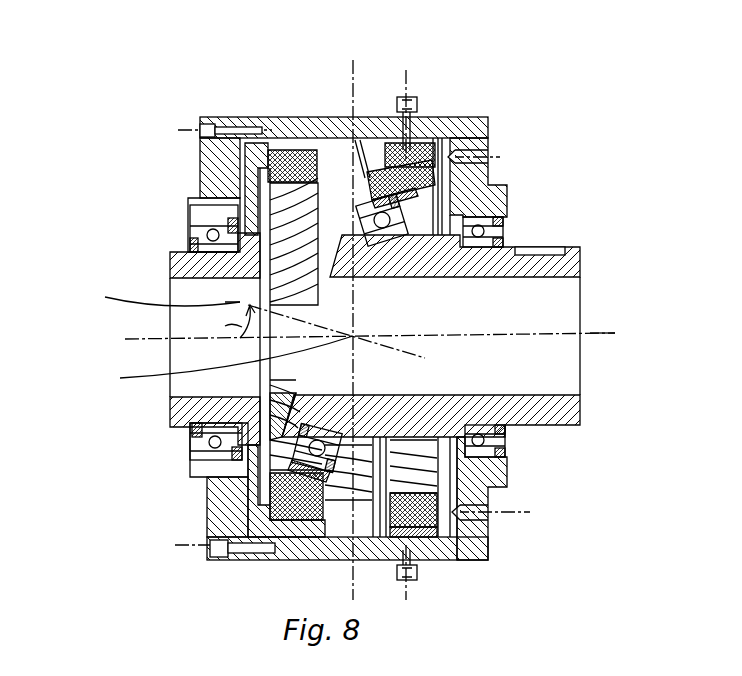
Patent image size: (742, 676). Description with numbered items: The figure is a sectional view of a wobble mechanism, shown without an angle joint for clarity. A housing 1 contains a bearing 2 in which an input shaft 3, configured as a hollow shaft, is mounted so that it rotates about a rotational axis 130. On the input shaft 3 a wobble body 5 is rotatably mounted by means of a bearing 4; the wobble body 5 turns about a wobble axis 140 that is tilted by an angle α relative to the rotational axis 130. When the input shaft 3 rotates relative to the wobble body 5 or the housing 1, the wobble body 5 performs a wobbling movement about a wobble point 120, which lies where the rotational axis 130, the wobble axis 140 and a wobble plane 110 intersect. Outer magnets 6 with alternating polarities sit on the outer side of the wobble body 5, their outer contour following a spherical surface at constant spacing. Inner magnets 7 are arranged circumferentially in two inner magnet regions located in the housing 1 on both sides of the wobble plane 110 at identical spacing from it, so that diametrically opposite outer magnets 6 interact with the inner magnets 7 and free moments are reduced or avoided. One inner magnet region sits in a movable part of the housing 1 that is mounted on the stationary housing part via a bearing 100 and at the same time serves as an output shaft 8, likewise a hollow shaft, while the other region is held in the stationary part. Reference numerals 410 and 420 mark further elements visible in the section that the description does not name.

The housing 1 is at (248, 112).
The bearing 2 is at (497, 212).
The input shaft 3 is at (580, 247).
The bearing 4 is at (367, 202).
The wobble body 5 is at (267, 463).
The outer magnets 6 is at (372, 138).
The inner magnets 7 is at (290, 196).
The output shaft 8 is at (170, 260).
The bearing 100 is at (188, 215).
The wobble plane 110 is at (427, 490).
The wobble point 120 is at (214, 366).
The rotational axis 130 is at (590, 327).
The wobble axis 140 is at (160, 312).
The fixed toothing 410 is at (310, 148).
The output toothing 420 is at (422, 148).